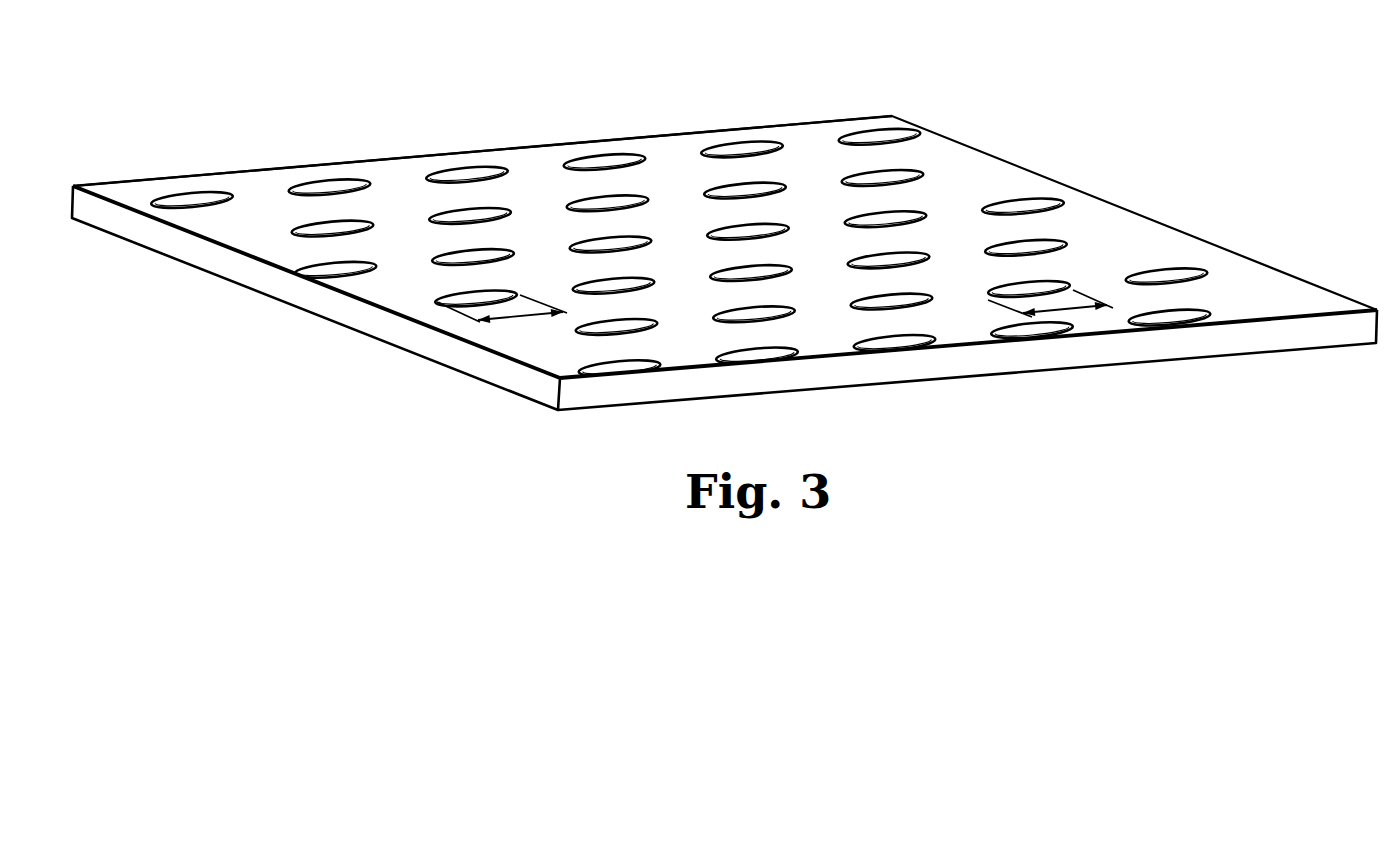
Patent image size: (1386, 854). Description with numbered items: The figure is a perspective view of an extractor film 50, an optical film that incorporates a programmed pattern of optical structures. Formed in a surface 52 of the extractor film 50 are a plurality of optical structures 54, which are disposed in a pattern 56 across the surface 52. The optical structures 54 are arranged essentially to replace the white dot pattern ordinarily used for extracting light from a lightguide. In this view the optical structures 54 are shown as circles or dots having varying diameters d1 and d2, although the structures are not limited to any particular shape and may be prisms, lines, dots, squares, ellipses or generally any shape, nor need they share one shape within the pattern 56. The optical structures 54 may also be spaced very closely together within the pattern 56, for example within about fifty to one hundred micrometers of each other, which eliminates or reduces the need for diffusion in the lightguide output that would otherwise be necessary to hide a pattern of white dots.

The extractor film 50 is at (724, 233).
The surface 52 is at (1097, 220).
The optical structures 54 is at (908, 173).
The pattern 56 is at (766, 116).
The diameter d1 is at (518, 314).
The diameter d2 is at (1068, 310).